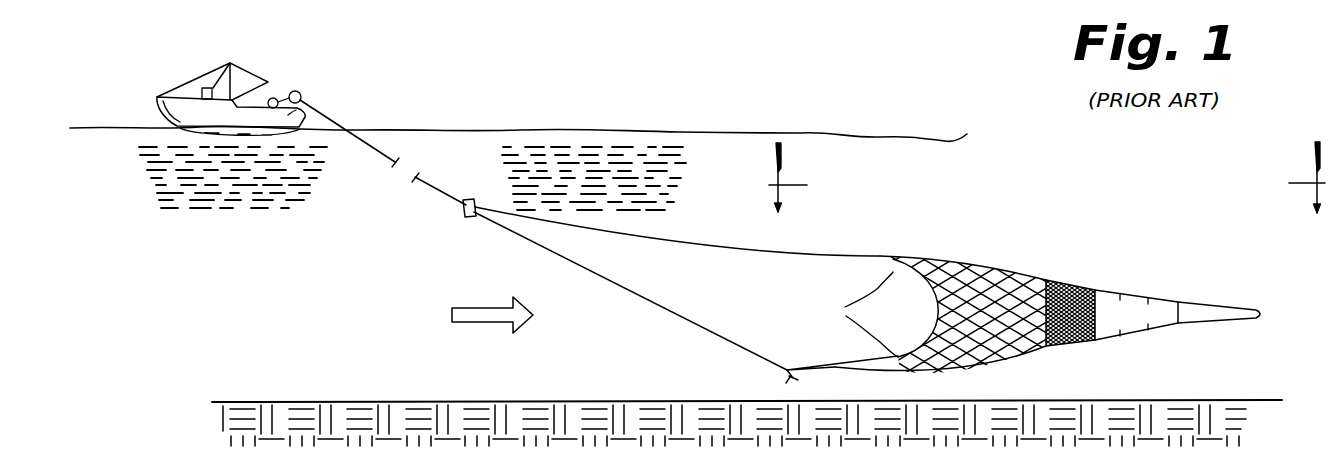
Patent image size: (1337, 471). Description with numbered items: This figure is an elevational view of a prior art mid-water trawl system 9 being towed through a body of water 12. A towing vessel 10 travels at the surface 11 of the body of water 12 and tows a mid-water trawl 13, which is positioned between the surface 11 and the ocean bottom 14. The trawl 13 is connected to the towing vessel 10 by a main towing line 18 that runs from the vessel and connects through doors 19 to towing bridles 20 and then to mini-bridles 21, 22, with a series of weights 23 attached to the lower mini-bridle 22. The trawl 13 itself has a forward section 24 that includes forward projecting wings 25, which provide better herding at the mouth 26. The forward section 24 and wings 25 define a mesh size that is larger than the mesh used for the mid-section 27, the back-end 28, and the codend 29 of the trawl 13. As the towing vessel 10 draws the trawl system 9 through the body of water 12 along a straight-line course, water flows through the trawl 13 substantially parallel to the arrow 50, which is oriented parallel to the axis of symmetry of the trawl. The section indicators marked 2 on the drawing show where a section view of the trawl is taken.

The trawl system 9 is at (890, 212).
The towing vessel 10 is at (183, 85).
The surface 11 is at (482, 130).
The body of water 12 is at (612, 148).
The mid-water trawl 13 is at (1107, 192).
The ocean bottom 14 is at (362, 402).
The main towing line 18 is at (438, 192).
The doors 19 is at (465, 217).
The towing bridles 20 is at (677, 243).
The mini-bridle 21 is at (880, 270).
The mini-bridle 22 is at (860, 369).
The weights 23 is at (790, 377).
The forward section 24 is at (973, 258).
The forward projecting wings 25 is at (943, 258).
The mouth 26 is at (856, 314).
The mid-section 27 is at (1078, 284).
The back-end 28 is at (1148, 300).
The codend 29 is at (1228, 304).
The arrow 50 is at (477, 322).
The section line 2- 2 is at (1047, 192).